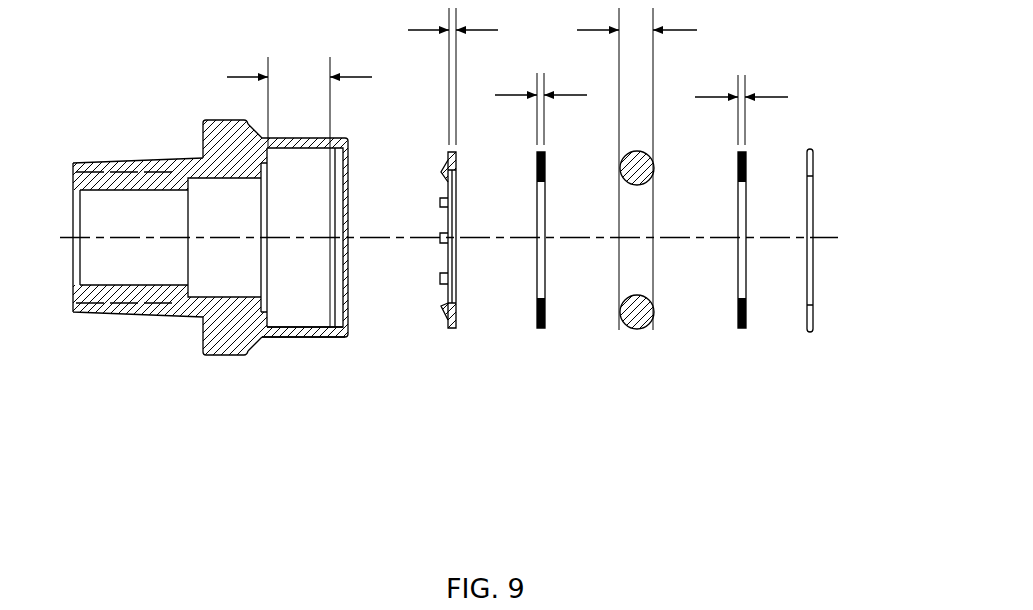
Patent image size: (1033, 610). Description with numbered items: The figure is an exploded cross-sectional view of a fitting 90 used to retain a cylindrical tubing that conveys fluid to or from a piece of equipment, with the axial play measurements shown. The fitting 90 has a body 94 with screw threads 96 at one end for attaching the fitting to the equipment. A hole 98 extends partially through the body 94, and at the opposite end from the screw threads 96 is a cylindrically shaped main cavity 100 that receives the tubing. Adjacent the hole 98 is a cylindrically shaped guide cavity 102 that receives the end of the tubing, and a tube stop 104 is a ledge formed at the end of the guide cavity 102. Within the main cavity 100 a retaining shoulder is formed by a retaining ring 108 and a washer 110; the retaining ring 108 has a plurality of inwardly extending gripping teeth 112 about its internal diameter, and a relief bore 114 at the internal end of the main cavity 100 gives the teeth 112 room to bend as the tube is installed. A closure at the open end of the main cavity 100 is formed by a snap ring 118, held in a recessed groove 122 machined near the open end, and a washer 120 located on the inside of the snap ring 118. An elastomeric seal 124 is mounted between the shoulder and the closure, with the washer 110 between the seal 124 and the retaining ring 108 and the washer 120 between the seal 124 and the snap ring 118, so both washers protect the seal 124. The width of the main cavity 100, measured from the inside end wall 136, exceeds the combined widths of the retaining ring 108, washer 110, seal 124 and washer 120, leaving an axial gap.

The fitting 90 is at (486, 284).
The body 94 is at (188, 157).
The screw threads 96 is at (124, 316).
The hole 98 is at (72, 190).
The main cavity 100 is at (300, 200).
The guide cavity 102 is at (237, 280).
The tube stop 104 is at (233, 335).
The retaining ring 108 is at (450, 326).
The washer 110 is at (541, 328).
The gripping teeth 112 is at (441, 278).
The relief bore 114 is at (268, 301).
The snap ring 118 is at (810, 333).
The washer 120 is at (739, 330).
The recessed groove 122 is at (328, 335).
The elastomeric seal 124 is at (627, 327).
The inside end wall 136 is at (263, 145).